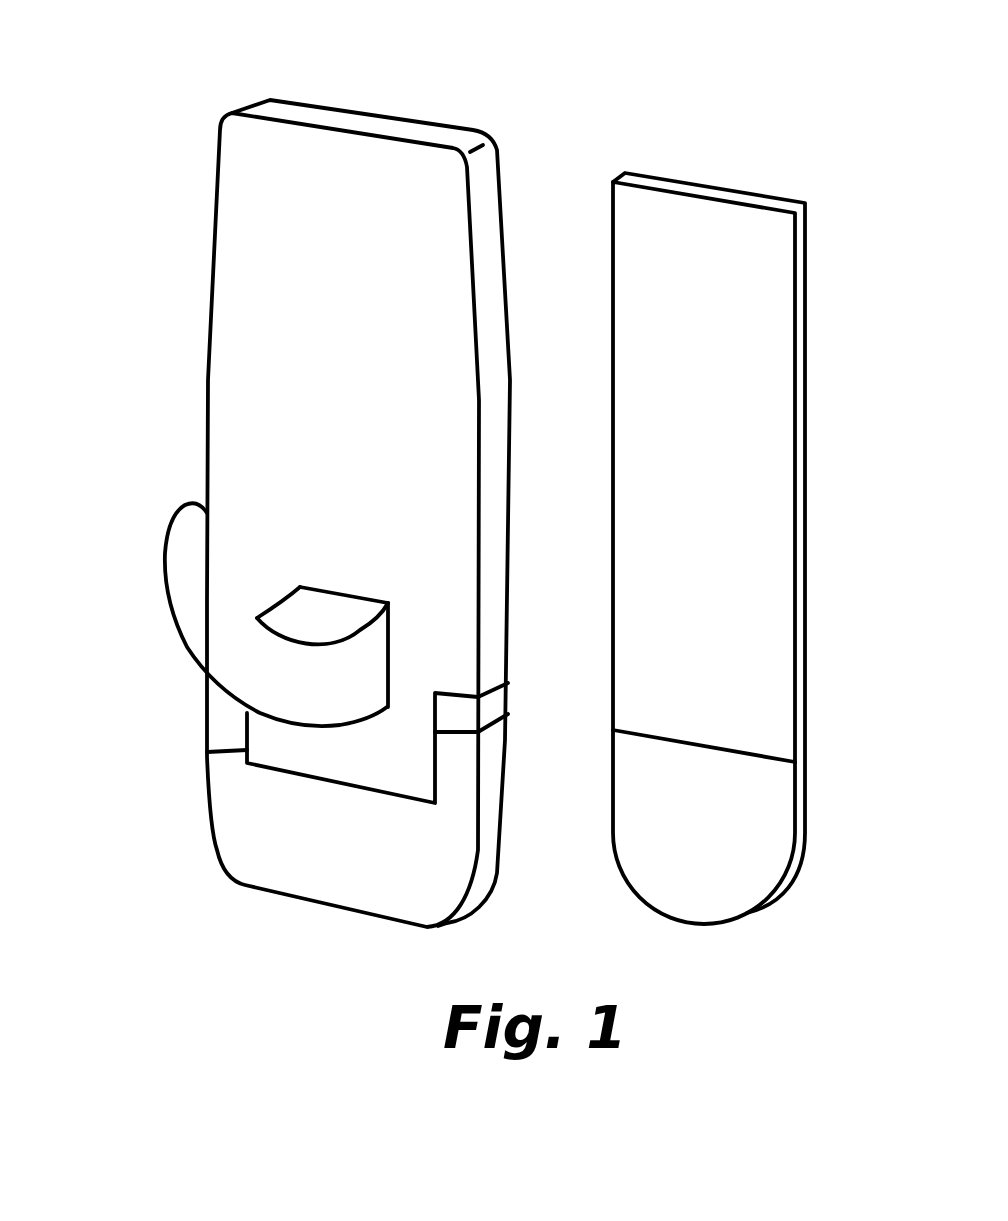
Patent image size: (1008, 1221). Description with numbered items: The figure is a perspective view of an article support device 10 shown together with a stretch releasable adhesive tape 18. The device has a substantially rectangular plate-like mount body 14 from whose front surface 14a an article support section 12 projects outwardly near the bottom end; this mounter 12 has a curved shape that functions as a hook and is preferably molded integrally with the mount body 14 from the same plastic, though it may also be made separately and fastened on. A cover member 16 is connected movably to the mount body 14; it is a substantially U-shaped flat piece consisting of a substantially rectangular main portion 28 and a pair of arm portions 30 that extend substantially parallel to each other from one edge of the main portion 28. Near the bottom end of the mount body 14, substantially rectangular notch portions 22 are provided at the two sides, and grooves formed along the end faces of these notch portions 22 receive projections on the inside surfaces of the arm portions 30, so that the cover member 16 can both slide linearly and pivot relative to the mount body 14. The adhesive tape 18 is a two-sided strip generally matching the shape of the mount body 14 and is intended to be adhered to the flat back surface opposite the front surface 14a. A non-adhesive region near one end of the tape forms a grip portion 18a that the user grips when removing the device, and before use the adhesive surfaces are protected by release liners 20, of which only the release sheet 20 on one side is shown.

The article support device 10 is at (172, 100).
The article support section 12 is at (188, 603).
The mount body 14 is at (210, 258).
The front surface 14a is at (263, 413).
The cover member 16 is at (238, 850).
The stretch releasable adhesive tape 18 is at (740, 180).
The grip portion 18a is at (740, 863).
The release liner 20 is at (762, 417).
The notch portion 22 is at (247, 750).
The main portion 28 is at (353, 873).
The arm portion 30 is at (217, 710).